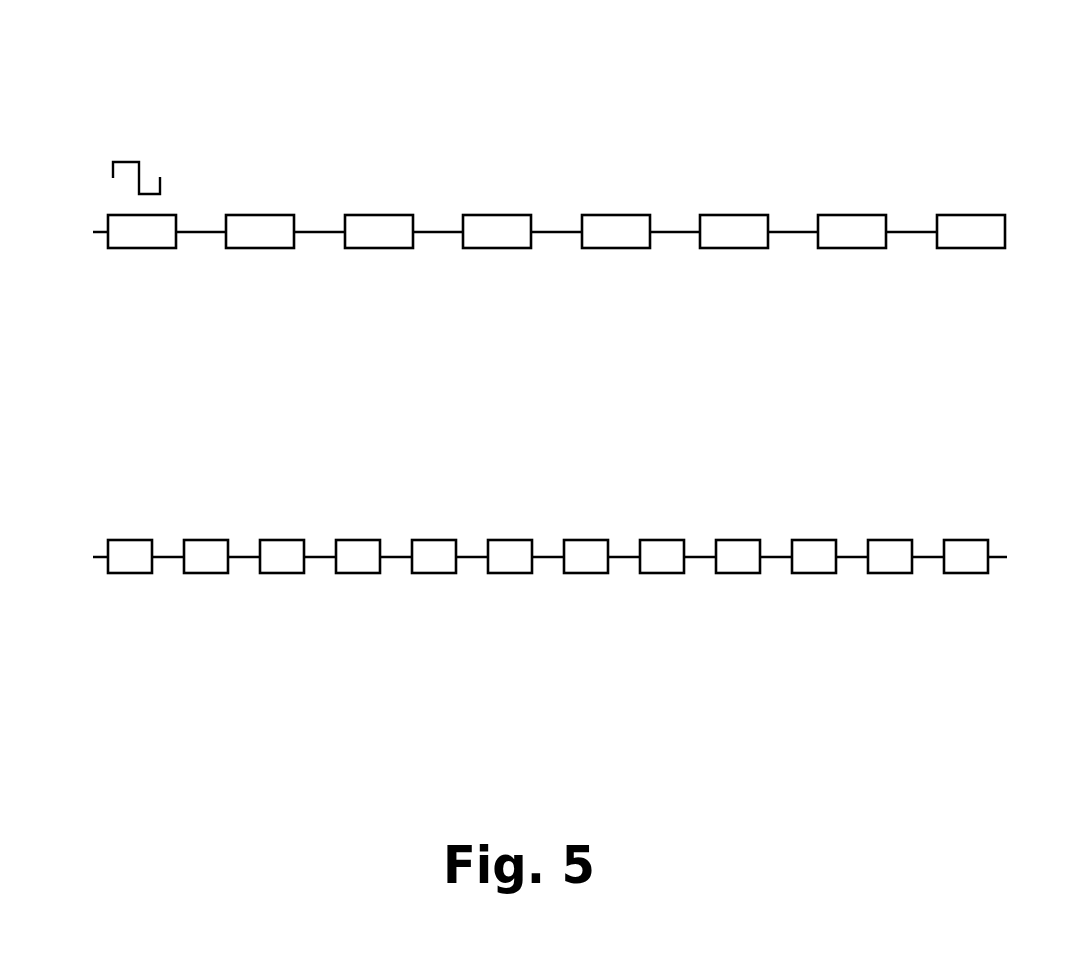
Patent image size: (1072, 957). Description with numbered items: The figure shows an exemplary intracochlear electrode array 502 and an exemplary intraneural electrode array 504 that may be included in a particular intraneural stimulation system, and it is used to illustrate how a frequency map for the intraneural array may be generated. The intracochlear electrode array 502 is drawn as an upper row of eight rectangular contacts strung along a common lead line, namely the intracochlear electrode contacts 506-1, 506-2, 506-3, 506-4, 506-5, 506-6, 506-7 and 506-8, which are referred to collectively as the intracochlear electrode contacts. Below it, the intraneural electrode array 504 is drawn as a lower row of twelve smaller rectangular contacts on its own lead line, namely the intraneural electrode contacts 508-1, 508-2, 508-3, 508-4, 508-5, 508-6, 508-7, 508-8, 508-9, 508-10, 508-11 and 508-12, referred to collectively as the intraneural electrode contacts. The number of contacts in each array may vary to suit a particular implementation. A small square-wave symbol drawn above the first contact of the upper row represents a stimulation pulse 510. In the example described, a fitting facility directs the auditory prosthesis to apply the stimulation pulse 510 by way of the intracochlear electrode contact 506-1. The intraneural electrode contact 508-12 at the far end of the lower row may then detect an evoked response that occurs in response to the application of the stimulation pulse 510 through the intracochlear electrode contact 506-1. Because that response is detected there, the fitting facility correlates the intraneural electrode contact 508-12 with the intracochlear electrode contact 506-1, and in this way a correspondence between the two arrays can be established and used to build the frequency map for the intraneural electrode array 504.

The intracochlear electrode array 502 is at (179, 106).
The intraneural electrode array 504 is at (161, 481).
The stimulation pulse 510 is at (144, 169).
The intracochlear electrode contact 506-1 is at (141, 248).
The intracochlear electrode contact 506-2 is at (259, 248).
The intracochlear electrode contact 506-3 is at (378, 248).
The intracochlear electrode contact 506-4 is at (496, 248).
The intracochlear electrode contact 506-5 is at (615, 248).
The intracochlear electrode contact 506-6 is at (733, 248).
The intracochlear electrode contact 506-7 is at (851, 248).
The intracochlear electrode contact 506-8 is at (970, 248).
The intraneural electrode contact 508-1 is at (130, 573).
The intraneural electrode contact 508-2 is at (207, 540).
The intraneural electrode contact 508-3 is at (282, 573).
The intraneural electrode contact 508-4 is at (359, 540).
The intraneural electrode contact 508-5 is at (434, 573).
The intraneural electrode contact 508-6 is at (511, 540).
The intraneural electrode contact 508-7 is at (586, 573).
The intraneural electrode contact 508-8 is at (663, 540).
The intraneural electrode contact 508-9 is at (738, 573).
The intraneural electrode contact 508-10 is at (815, 540).
The intraneural electrode contact 508-11 is at (890, 573).
The intraneural electrode contact 508-12 is at (965, 540).